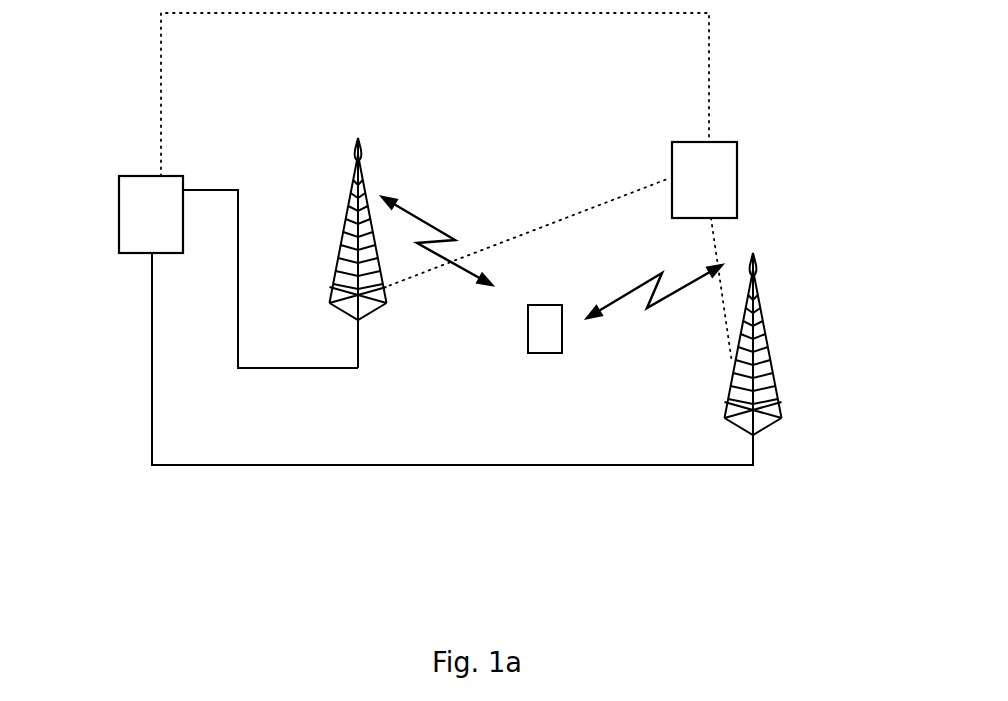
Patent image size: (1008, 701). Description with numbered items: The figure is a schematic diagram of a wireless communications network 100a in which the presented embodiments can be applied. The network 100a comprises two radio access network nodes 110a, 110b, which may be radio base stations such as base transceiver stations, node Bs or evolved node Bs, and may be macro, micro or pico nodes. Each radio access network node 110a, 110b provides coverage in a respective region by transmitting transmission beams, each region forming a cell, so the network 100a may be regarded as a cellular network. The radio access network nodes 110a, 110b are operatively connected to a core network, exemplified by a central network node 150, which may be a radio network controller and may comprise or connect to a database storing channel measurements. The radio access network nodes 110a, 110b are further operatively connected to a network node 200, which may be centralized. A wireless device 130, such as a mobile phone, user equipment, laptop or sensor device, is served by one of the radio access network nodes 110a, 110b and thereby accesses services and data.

The communications network 100a is at (815, 62).
The radio access network node 110a is at (359, 141).
The radio access network node 110b is at (755, 265).
The wireless device 130 is at (543, 337).
The central network node 150 is at (737, 170).
The network node 200 is at (119, 213).